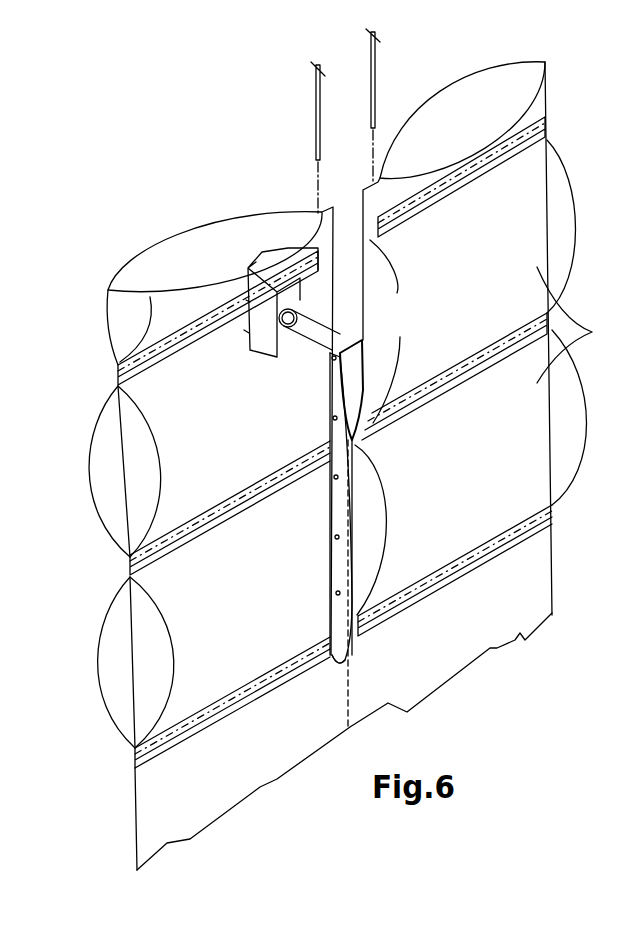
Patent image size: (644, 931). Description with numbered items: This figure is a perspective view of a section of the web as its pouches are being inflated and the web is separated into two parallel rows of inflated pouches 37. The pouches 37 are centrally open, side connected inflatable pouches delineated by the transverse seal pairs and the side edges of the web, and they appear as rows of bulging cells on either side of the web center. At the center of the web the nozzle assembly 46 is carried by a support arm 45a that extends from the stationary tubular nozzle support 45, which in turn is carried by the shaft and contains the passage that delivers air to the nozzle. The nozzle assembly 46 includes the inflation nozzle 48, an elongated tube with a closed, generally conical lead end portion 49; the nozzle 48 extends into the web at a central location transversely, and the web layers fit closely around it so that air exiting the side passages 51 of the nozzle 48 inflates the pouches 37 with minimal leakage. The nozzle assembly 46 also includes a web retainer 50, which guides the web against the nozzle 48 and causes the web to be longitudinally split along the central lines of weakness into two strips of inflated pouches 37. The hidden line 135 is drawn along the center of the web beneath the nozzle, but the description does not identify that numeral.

The inflatable pouch 37 is at (107, 482).
The nozzle support 45 is at (292, 342).
The support arm 45a is at (320, 337).
The nozzle assembly 46 is at (368, 340).
The inflation nozzle 48 is at (340, 570).
The lead end portion 49 is at (338, 655).
The web retainer 50 is at (355, 402).
The side passages 51 is at (336, 477).
The hidden line 135 is at (352, 702).